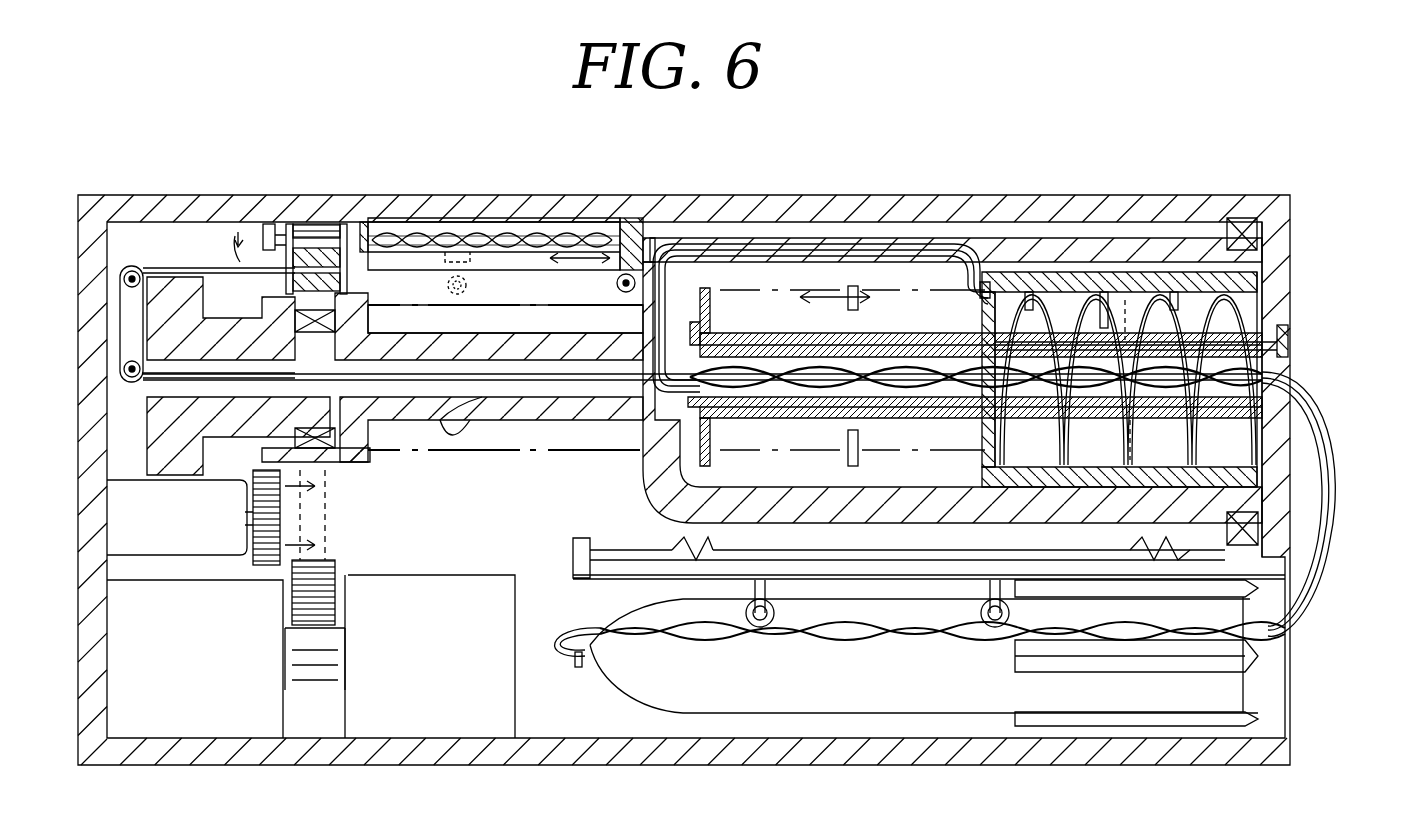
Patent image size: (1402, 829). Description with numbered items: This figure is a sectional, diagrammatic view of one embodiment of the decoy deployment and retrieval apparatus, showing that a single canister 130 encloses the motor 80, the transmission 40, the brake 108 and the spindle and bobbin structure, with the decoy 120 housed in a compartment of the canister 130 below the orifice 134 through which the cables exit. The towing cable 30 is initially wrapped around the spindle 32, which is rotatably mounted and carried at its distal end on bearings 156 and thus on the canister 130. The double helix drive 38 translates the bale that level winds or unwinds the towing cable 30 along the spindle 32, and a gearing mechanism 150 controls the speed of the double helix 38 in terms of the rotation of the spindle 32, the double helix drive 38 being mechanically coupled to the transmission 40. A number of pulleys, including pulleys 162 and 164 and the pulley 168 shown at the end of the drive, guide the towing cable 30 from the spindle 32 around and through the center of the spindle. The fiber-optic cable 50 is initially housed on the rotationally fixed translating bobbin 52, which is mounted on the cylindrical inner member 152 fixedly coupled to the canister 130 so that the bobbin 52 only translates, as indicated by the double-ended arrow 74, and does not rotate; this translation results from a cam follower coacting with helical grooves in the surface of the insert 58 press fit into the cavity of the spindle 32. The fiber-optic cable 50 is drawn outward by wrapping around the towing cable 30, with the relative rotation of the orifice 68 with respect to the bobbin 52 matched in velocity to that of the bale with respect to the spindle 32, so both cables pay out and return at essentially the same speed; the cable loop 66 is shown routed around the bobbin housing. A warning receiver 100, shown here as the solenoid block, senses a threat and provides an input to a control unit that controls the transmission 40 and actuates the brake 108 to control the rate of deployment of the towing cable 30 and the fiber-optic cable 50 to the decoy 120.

The canister 130 is at (1110, 164).
The pulley 162 is at (131, 271).
The pulley 164 is at (145, 318).
The brake 108 is at (233, 338).
The gearing mechanism 150 is at (318, 235).
The double helix drive 38 is at (400, 238).
The pulley 168 is at (617, 286).
The spindle 32 is at (535, 333).
The cylindrical inner member 152 is at (432, 332).
The towing cable 30 is at (476, 283).
The fiber-optic cable 50 is at (1338, 470).
The insert 58 is at (1275, 255).
The bearings 156 is at (1243, 218).
The cable loop 66 is at (918, 252).
The double-ended arrow 74 is at (838, 290).
The bobbin 52 is at (744, 314).
The orifice 68 is at (950, 300).
The orifice 134 is at (1290, 368).
The decoy 120 is at (845, 696).
The warning receiver 100 is at (192, 552).
The transmission 40 is at (212, 624).
The motor 80 is at (447, 624).